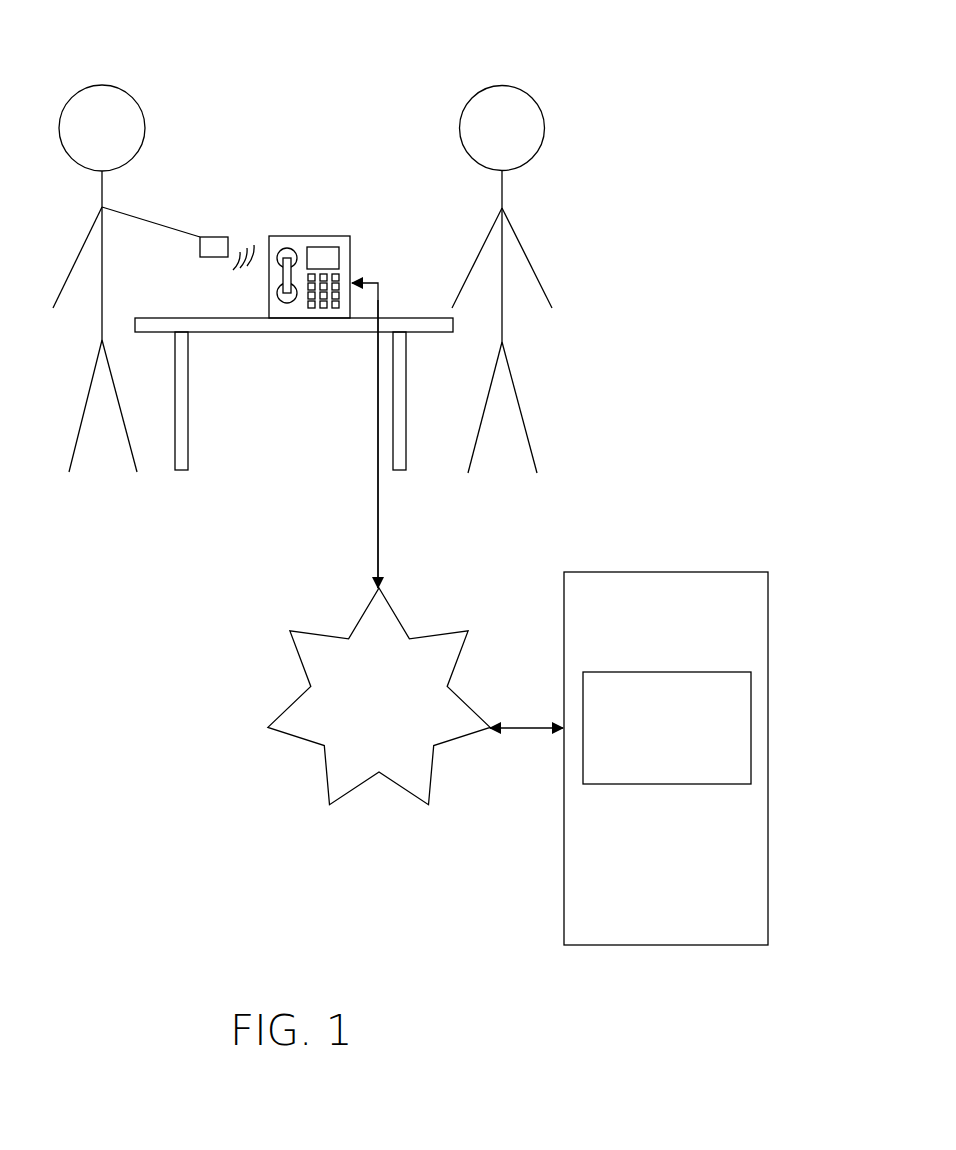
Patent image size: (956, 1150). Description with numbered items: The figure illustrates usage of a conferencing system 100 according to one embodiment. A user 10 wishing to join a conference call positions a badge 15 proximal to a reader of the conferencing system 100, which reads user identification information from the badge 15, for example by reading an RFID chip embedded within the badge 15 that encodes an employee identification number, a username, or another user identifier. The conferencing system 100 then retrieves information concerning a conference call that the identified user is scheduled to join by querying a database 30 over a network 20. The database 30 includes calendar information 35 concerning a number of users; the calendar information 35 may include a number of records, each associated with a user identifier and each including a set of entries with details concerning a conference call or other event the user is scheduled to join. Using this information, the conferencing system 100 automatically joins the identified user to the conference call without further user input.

The user 10 is at (110, 65).
The badge 15 is at (203, 258).
The conferencing system 100 is at (322, 236).
The network 20 is at (450, 631).
The database 30 is at (768, 581).
The calendar information 35 is at (751, 712).